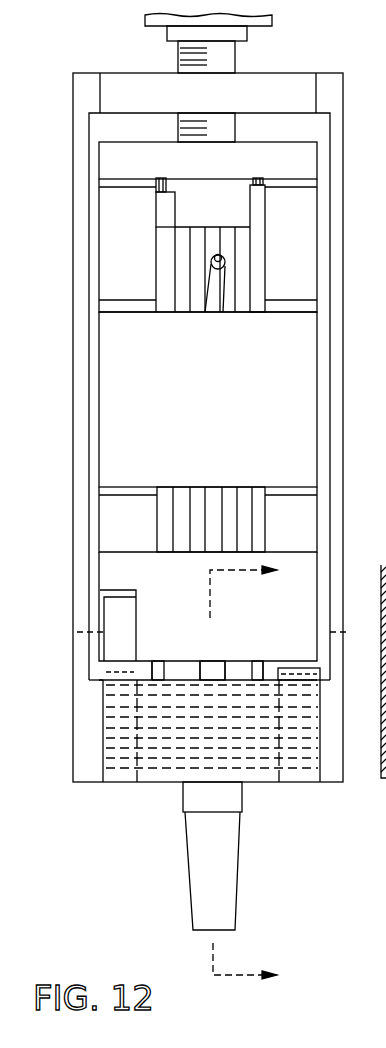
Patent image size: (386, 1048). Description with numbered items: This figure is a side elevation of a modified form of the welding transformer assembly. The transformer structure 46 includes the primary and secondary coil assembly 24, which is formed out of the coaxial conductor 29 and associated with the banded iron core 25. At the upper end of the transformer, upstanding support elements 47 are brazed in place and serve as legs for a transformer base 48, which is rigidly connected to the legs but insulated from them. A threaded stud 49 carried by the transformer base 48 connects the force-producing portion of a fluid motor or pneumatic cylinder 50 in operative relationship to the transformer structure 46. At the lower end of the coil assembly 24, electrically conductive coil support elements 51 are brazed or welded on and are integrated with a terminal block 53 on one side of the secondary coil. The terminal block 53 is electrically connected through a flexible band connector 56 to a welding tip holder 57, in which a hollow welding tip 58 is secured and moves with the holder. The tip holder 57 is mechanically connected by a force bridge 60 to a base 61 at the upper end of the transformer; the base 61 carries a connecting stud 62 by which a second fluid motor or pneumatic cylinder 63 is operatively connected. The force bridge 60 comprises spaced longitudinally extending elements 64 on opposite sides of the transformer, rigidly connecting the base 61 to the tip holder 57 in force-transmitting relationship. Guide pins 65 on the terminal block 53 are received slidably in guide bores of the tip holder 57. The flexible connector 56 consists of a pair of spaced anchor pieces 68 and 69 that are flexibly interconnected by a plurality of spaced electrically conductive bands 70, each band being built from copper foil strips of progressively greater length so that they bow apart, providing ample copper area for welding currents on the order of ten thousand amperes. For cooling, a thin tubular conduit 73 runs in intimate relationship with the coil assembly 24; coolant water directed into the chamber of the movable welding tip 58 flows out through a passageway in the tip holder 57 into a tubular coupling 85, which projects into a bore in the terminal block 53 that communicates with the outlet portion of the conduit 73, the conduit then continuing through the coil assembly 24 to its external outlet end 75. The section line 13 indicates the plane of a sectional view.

The section line 13- 13 is at (269, 785).
The primary and secondary coil assembly 24 is at (163, 517).
The banded iron core 25 is at (133, 410).
The coaxial conductor 29 is at (253, 198).
The transformer structure 46 is at (72, 624).
The upstanding support elements 47 is at (117, 257).
The transformer base 48 is at (113, 162).
The threaded stud 49 is at (232, 128).
The fluid motor or pneumatic cylinder 50 is at (307, 512).
The coil support elements 51 is at (118, 510).
The terminal block 53 is at (117, 565).
The flexible band connector 56 is at (158, 773).
The welding tip holder 57 is at (260, 773).
The hollow welding tip 58 is at (193, 855).
The force bridge 60 is at (77, 703).
The base 61 is at (303, 77).
The connecting stud 62 is at (232, 58).
The second fluid motor or pneumatic cylinder 63 is at (150, 28).
The longitudinally extending elements 64 is at (340, 305).
The guide pins 65 is at (160, 667).
The anchor piece 68 is at (113, 632).
The anchor piece 69 is at (307, 775).
The electrically conductive bands 70 is at (247, 765).
The tubular conduit 73 is at (217, 307).
The outlet end 75 is at (222, 265).
The tubular coupling 85 is at (212, 665).